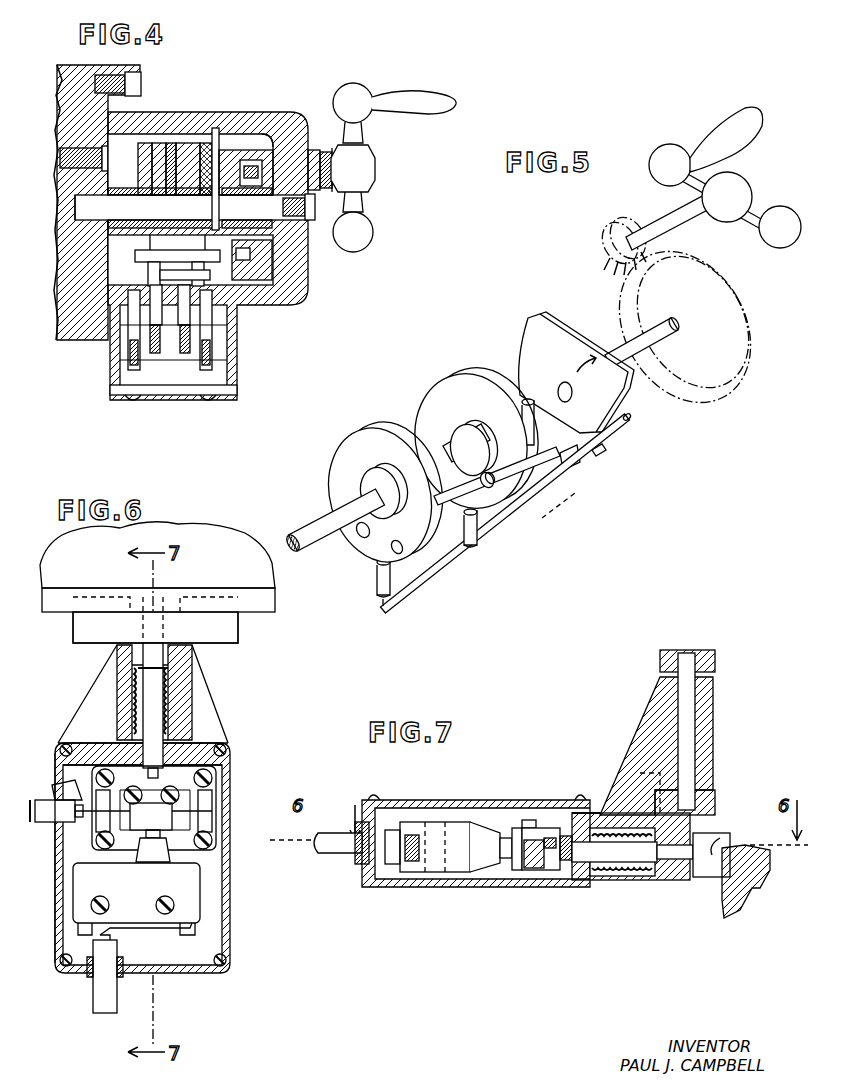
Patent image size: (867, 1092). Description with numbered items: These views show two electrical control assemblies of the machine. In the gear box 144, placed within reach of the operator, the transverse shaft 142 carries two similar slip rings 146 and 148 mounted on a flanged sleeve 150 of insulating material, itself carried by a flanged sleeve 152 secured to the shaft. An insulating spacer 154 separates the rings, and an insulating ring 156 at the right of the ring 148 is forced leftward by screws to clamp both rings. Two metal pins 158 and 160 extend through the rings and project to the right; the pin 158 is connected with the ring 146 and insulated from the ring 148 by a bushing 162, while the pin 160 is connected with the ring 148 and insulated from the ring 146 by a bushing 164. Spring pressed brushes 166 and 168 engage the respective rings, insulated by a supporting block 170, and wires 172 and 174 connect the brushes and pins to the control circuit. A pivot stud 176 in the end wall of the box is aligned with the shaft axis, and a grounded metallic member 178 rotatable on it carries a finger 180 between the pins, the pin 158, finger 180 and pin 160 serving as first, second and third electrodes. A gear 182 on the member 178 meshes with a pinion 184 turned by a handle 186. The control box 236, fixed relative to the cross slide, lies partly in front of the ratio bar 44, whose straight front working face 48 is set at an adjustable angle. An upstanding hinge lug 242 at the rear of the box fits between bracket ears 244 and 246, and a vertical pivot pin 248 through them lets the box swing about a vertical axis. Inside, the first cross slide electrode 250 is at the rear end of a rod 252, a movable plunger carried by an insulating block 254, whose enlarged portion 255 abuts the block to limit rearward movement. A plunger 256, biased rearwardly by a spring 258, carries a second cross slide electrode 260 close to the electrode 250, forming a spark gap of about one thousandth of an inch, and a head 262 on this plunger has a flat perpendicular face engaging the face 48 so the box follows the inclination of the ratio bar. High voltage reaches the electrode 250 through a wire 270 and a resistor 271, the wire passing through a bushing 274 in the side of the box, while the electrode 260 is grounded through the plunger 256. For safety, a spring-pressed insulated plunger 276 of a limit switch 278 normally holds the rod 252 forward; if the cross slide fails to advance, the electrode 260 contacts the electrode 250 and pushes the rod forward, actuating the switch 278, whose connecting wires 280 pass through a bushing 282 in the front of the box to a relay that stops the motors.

In FIG. 6, the ratio bar 44 is at (228, 540).
In FIG. 7, the ratio bar 44 is at (730, 918).
In FIG. 6, the front working face 48 is at (255, 612).
In FIG. 7, the front working face 48 is at (712, 840).
In FIG. 4, the transverse shaft 142 is at (82, 208).
In FIG. 5, the transverse shaft 142 is at (312, 530).
In FIG. 4, the gear box 144 is at (216, 134).
In FIG. 4, the slip ring 146 is at (160, 143).
In FIG. 5, the slip ring 146 is at (366, 428).
In FIG. 4, the slip ring 148 is at (190, 143).
In FIG. 5, the slip ring 148 is at (471, 378).
In FIG. 4, the flanged sleeve of insulating material 150 is at (144, 143).
In FIG. 5, the flanged sleeve of insulating material 150 is at (462, 428).
In FIG. 4, the flanged sleeve 152 is at (86, 243).
In FIG. 4, the insulating spacer 154 is at (172, 143).
In FIG. 4, the insulating ring 156 is at (252, 136).
In FIG. 4, the metal pin 158 is at (146, 256).
In FIG. 5, the metal pin 158 is at (556, 458).
In FIG. 5, the metal pin 160 is at (528, 402).
In FIG. 5, the bushing 162 is at (494, 476).
In FIG. 5, the bushing 164 is at (370, 530).
In FIG. 4, the brush 166 is at (148, 274).
In FIG. 5, the brush 166 is at (370, 580).
In FIG. 4, the brush 168 is at (210, 276).
In FIG. 5, the brush 168 is at (468, 540).
In FIG. 4, the supporting block 170 is at (232, 335).
In FIG. 5, the wire 172 is at (452, 568).
In FIG. 5, the wire 174 is at (500, 530).
In FIG. 4, the pivot stud 176 is at (332, 150).
In FIG. 5, the pivot stud 176 is at (620, 350).
In FIG. 4, the metallic member 178 is at (306, 135).
In FIG. 5, the metallic member 178 is at (562, 328).
In FIG. 4, the finger 180 is at (232, 247).
In FIG. 5, the finger 180 is at (606, 454).
In FIG. 4, the gear 182 is at (270, 125).
In FIG. 5, the gear 182 is at (722, 282).
In FIG. 5, the pinion 184 is at (640, 222).
In FIG. 4, the handle 186 is at (395, 100).
In FIG. 5, the handle 186 is at (738, 116).
In FIG. 6, the control box 236 is at (55, 895).
In FIG. 7, the control box 236 is at (470, 888).
In FIG. 7, the hinge lug 242 is at (700, 718).
In FIG. 7, the ear 244 is at (716, 661).
In FIG. 7, the ear 246 is at (712, 795).
In FIG. 7, the vertical pivot pin 248 is at (670, 715).
In FIG. 6, the first cross slide electrode 250 is at (210, 760).
In FIG. 7, the first cross slide electrode 250 is at (578, 813).
In FIG. 6, the rod 252 is at (222, 765).
In FIG. 7, the rod 252 is at (562, 836).
In FIG. 6, the block of insulating material 254 is at (200, 797).
In FIG. 7, the block of insulating material 254 is at (556, 870).
In FIG. 6, the enlarged portion 255 is at (160, 832).
In FIG. 7, the enlarged portion 255 is at (517, 870).
In FIG. 6, the plunger 256 is at (148, 686).
In FIG. 7, the plunger 256 is at (630, 862).
In FIG. 6, the spring 258 is at (134, 705).
In FIG. 7, the spring 258 is at (645, 870).
In FIG. 6, the second cross slide electrode 260 is at (195, 750).
In FIG. 7, the second cross slide electrode 260 is at (576, 813).
In FIG. 6, the head 262 is at (73, 640).
In FIG. 7, the head 262 is at (730, 836).
In FIG. 6, the wire 270 is at (46, 800).
In FIG. 6, the resistor 271 is at (135, 832).
In FIG. 6, the bushing 274 is at (52, 785).
In FIG. 6, the spring-pressed plunger 276 is at (150, 862).
In FIG. 7, the spring-pressed plunger 276 is at (503, 838).
In FIG. 6, the limit switch 278 is at (190, 903).
In FIG. 7, the limit switch 278 is at (446, 825).
In FIG. 6, the connecting wires 280 is at (112, 995).
In FIG. 7, the connecting wires 280 is at (320, 858).
In FIG. 6, the bushing 282 is at (88, 975).
In FIG. 7, the bushing 282 is at (356, 870).